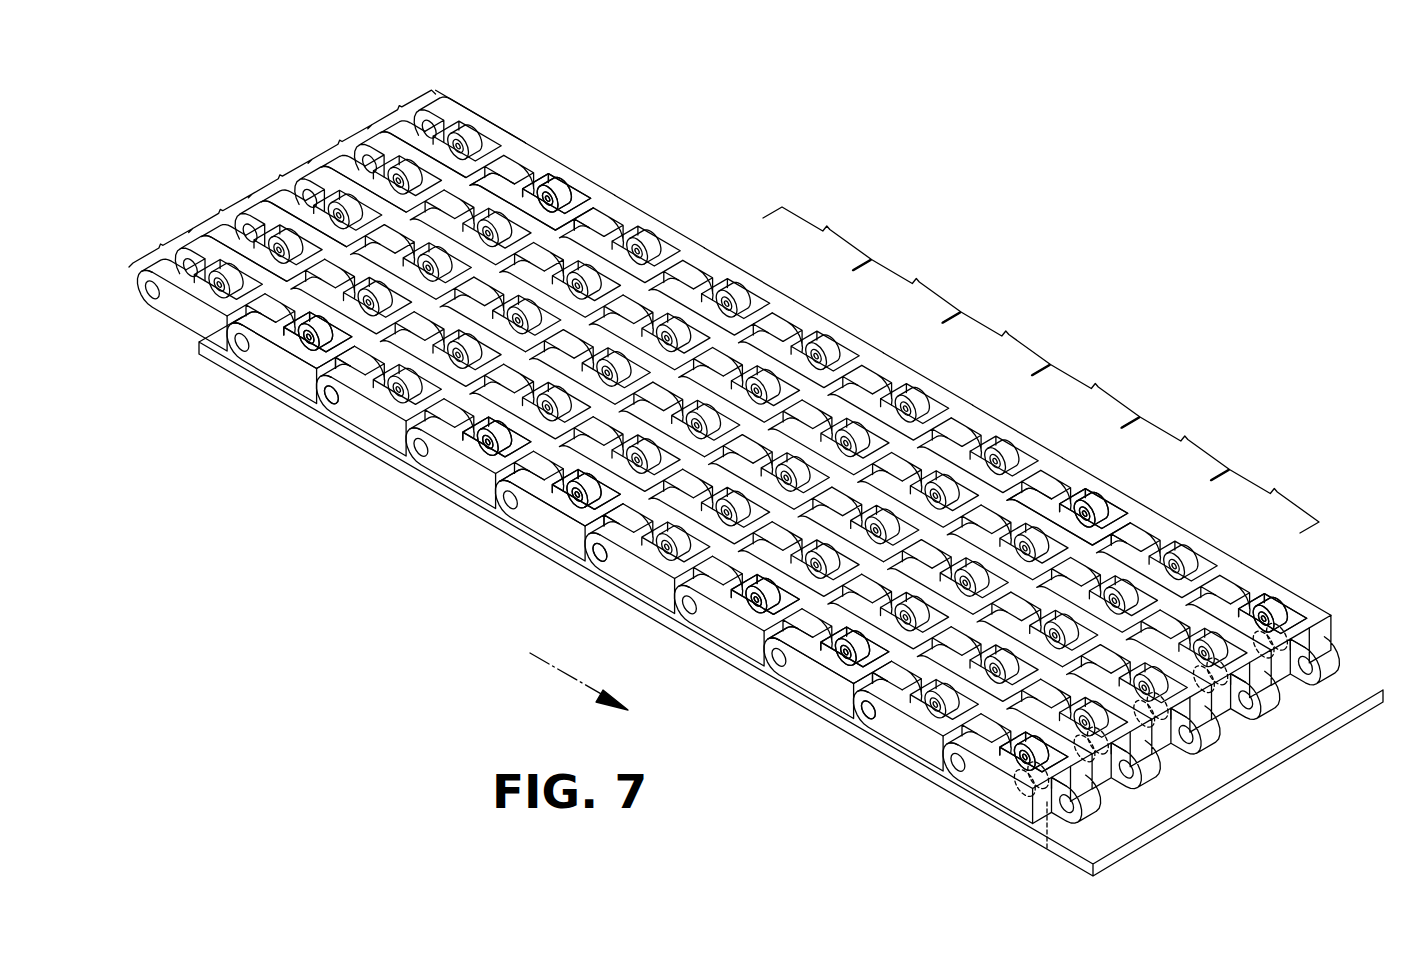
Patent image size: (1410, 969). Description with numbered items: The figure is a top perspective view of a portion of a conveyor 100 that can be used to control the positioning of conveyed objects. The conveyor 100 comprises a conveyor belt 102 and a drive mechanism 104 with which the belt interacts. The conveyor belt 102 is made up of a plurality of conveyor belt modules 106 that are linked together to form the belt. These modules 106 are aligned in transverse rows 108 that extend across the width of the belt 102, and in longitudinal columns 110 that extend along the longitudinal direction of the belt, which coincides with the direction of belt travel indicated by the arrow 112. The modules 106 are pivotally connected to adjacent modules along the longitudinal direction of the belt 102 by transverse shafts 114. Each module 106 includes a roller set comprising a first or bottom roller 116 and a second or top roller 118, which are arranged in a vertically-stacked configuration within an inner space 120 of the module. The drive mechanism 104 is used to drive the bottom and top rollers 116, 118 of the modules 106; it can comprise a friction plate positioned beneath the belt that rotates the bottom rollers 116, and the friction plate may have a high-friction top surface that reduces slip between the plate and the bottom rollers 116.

The conveyor 100 is at (756, 467).
The conveyor belt 102 is at (756, 467).
The drive mechanism 104 is at (1244, 811).
The conveyor belt module 106 is at (267, 353).
The transverse row 108 is at (1041, 370).
The longitudinal column 110 is at (280, 172).
The arrow 112 is at (570, 675).
The transverse shaft 114 is at (331, 397).
The bottom roller 116 is at (1047, 848).
The top roller 118 is at (465, 455).
The inner space 120 is at (378, 433).